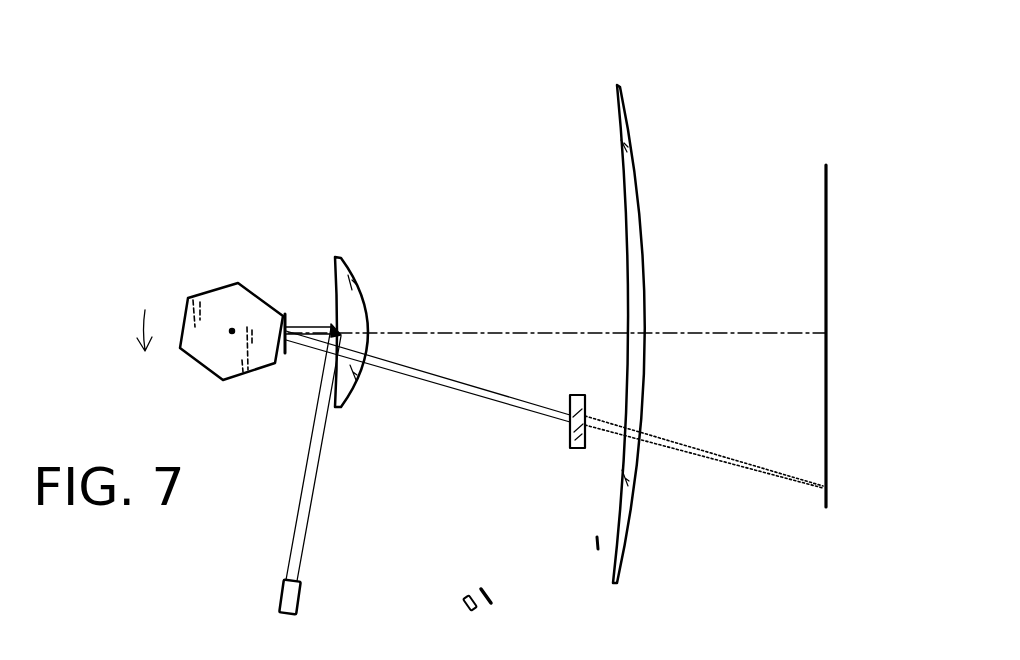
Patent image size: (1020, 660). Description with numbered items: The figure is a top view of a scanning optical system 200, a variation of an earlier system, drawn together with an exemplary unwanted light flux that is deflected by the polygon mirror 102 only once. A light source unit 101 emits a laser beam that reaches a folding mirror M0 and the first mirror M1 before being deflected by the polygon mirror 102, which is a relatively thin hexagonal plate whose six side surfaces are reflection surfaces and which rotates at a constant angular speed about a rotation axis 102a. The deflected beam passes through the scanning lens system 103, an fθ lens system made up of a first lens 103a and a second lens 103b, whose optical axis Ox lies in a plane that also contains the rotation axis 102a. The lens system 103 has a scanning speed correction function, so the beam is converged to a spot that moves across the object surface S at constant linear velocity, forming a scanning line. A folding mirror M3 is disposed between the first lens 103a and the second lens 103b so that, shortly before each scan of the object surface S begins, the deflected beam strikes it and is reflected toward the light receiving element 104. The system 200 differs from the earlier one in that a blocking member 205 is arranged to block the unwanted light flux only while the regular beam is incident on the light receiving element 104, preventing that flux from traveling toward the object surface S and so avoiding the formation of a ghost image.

The scanning optical system 200 is at (271, 114).
The light source unit 101 is at (282, 589).
The polygon mirror 102 is at (207, 296).
The rotation axis 102a is at (232, 334).
The scanning lens system (fθ lens system) 103 is at (644, 25).
The first lens 103a is at (352, 268).
The second lens 103b is at (627, 115).
The light receiving element 104 is at (466, 597).
The blocking member 205 is at (567, 430).
The folding mirror M0 is at (332, 322).
The first mirror M1 is at (253, 278).
The folding mirror M3 is at (598, 550).
The object surface S is at (825, 206).
The optical axis Ox is at (708, 332).